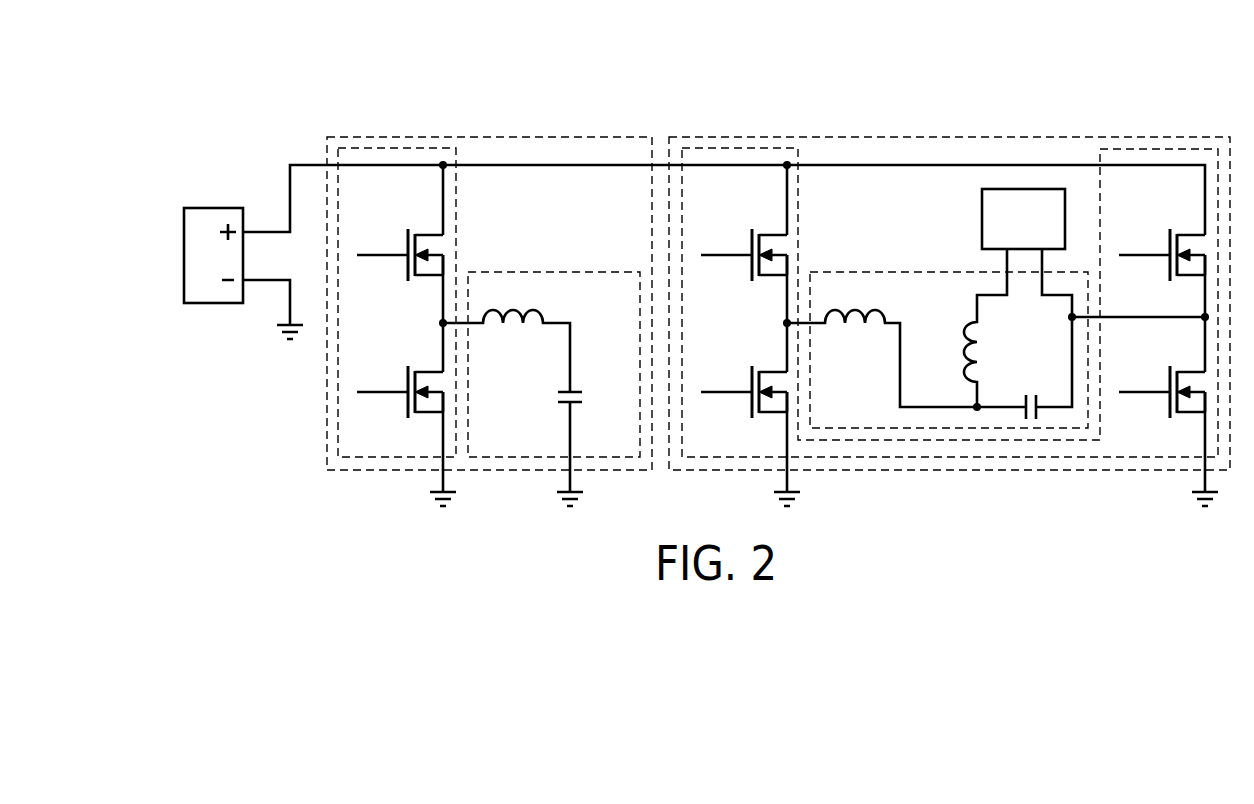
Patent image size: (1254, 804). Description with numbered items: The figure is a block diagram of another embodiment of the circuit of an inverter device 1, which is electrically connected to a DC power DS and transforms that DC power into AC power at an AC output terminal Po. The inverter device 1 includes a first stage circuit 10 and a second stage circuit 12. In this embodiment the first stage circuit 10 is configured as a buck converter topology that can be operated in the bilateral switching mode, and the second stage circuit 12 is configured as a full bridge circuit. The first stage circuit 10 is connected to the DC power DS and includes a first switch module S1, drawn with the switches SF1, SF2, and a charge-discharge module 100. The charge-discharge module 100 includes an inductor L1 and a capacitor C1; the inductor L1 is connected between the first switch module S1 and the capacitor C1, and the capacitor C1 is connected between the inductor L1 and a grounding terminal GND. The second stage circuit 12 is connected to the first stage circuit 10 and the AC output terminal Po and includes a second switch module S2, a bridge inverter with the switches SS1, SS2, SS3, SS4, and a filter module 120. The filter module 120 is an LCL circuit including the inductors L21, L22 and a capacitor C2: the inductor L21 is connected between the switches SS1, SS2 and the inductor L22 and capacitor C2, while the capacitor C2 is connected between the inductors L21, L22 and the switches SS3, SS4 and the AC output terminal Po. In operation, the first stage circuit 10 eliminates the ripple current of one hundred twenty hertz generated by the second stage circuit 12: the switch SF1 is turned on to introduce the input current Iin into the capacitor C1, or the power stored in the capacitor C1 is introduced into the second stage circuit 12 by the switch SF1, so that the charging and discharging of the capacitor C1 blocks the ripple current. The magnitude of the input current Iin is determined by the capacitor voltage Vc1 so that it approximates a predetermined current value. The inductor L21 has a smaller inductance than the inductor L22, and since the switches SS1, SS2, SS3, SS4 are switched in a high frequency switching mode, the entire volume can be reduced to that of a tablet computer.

The inverter device 1 is at (1233, 32).
The first stage circuit 10 is at (489, 136).
The second stage circuit 12 is at (944, 136).
The charge-discharge module 100 is at (557, 271).
The filter module 120 is at (915, 271).
The first switch module S1 is at (400, 147).
The second switch module S2 is at (1158, 147).
The DC power DS is at (213, 208).
The AC output terminal Po is at (1028, 188).
The input current Iin is at (724, 184).
The grounding terminal GND is at (274, 326).
The switch SF1 is at (399, 249).
The switch SF2 is at (398, 386).
The switch SS1 is at (742, 249).
The switch SS2 is at (742, 386).
The switch SS3 is at (1160, 249).
The switch SS4 is at (1160, 387).
The inductor L1 is at (506, 335).
The capacitor C1 is at (588, 444).
The capacitor voltage Vc1 is at (600, 352).
The inductor L21 is at (906, 342).
The inductor L22 is at (959, 330).
The capacitor C2 is at (1109, 334).